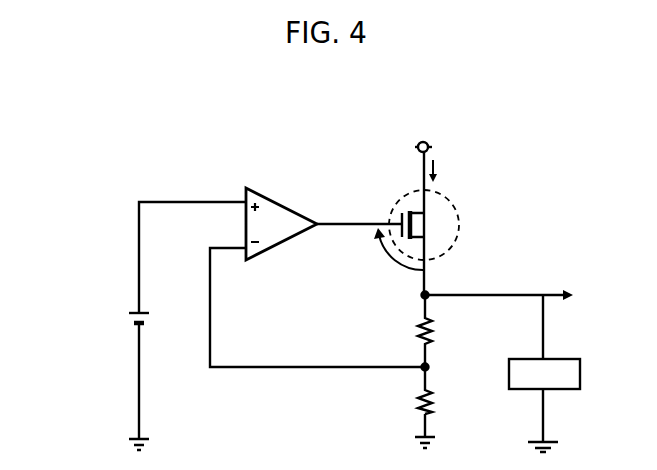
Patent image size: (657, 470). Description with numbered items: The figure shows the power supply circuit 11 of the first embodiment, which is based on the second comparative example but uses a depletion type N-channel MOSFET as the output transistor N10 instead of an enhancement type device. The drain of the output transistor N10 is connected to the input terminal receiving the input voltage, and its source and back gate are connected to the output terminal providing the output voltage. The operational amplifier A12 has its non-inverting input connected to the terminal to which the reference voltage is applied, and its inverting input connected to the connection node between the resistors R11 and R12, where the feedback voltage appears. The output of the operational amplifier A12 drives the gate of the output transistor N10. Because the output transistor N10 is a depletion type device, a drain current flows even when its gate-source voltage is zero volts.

The power supply circuit 11 is at (63, 113).
The operational amplifier A12 is at (286, 205).
The output transistor N10 is at (434, 226).
The resistor R12 is at (437, 331).
The resistor R11 is at (437, 404).